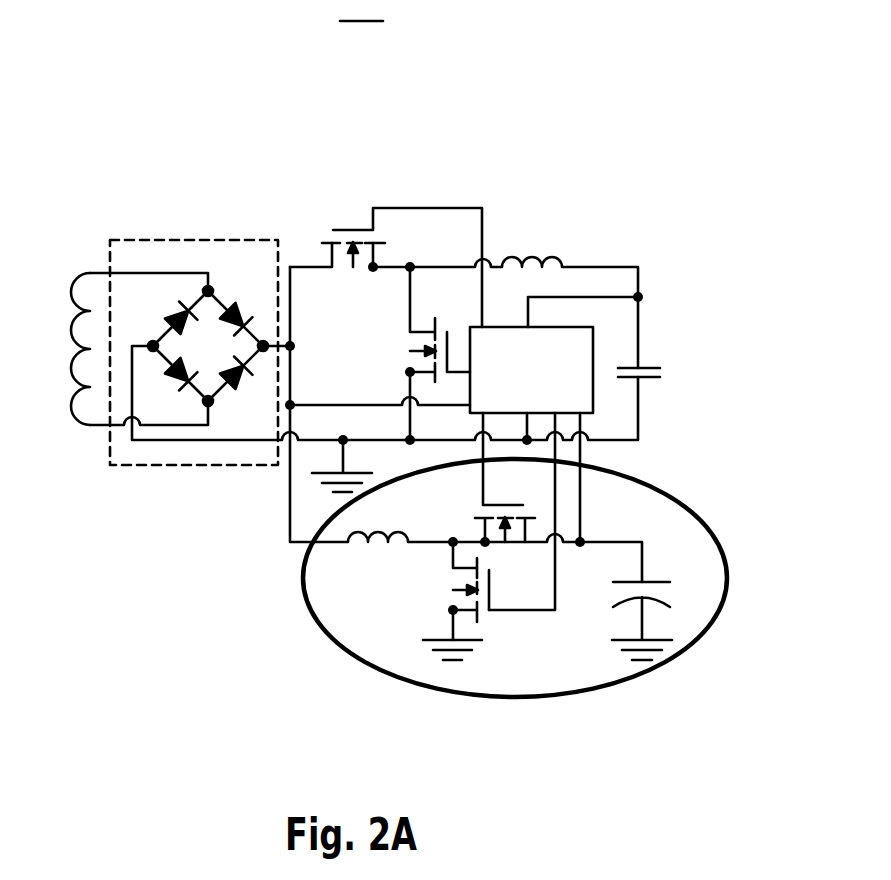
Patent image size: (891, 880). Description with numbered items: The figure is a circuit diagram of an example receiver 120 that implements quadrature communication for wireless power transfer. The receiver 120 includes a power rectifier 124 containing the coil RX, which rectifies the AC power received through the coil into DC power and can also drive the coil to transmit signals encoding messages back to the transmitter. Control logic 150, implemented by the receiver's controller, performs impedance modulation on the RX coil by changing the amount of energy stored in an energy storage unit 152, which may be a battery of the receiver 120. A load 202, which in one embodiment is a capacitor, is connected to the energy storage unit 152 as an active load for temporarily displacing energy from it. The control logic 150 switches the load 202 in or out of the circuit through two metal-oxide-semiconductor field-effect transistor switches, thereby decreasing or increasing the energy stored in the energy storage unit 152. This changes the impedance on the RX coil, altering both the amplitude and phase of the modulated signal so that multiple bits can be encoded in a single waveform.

The receiver 120 is at (452, 348).
The power rectifier 124 is at (183, 238).
The control logic 150 is at (547, 386).
The energy storage unit 152 is at (303, 578).
The load 202 is at (673, 592).